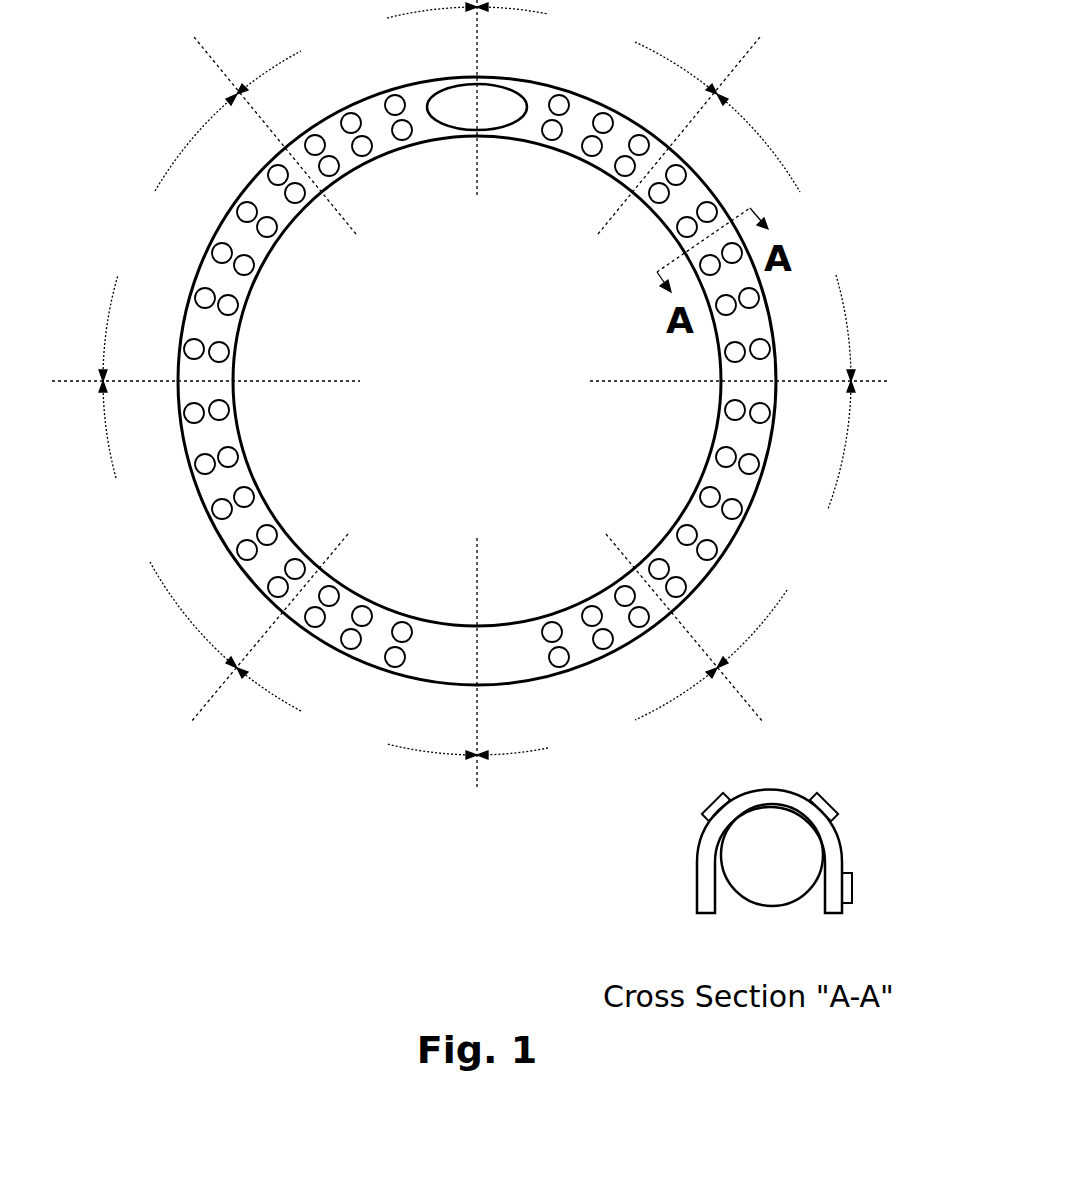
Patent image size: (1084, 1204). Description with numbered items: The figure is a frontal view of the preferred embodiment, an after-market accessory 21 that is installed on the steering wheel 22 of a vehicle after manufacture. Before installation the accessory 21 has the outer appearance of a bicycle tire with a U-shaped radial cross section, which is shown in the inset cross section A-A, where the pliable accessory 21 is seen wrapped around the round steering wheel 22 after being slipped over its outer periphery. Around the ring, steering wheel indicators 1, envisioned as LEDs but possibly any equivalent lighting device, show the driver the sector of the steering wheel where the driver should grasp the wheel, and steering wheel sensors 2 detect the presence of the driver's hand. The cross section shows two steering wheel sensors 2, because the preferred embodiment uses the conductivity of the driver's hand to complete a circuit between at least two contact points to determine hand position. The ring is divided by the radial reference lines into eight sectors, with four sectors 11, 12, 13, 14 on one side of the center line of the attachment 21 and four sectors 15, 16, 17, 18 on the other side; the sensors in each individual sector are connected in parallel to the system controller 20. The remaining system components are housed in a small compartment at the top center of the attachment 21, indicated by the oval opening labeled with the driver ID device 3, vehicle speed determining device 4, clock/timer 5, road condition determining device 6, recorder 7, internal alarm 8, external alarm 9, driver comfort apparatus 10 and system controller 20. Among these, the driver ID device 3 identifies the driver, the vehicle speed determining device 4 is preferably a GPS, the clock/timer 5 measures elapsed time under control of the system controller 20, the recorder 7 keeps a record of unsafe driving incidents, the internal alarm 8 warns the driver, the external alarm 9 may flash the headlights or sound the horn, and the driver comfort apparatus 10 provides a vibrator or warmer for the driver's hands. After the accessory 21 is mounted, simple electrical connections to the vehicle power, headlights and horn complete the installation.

The steering wheel indicators 1 is at (852, 888).
The steering wheel sensors 2 is at (827, 800).
The driver ID device 3 is at (476, 177).
The vehicle speed determining device 4 is at (476, 177).
The clock/timer 5 is at (476, 177).
The road condition determining device 6 is at (476, 177).
The recorder 7 is at (476, 177).
The internal alarm 8 is at (476, 177).
The external alarm 9 is at (476, 177).
The driver comfort apparatus 10 is at (476, 177).
The sector 11 is at (597, 50).
The sector 12 is at (784, 237).
The sector 13 is at (784, 524).
The sector 14 is at (597, 712).
The sector 15 is at (357, 712).
The sector 16 is at (166, 524).
The sector 17 is at (170, 237).
The sector 18 is at (357, 50).
The system controller 20 is at (510, 130).
The accessory 21 is at (697, 863).
The steering wheel 22 is at (772, 905).